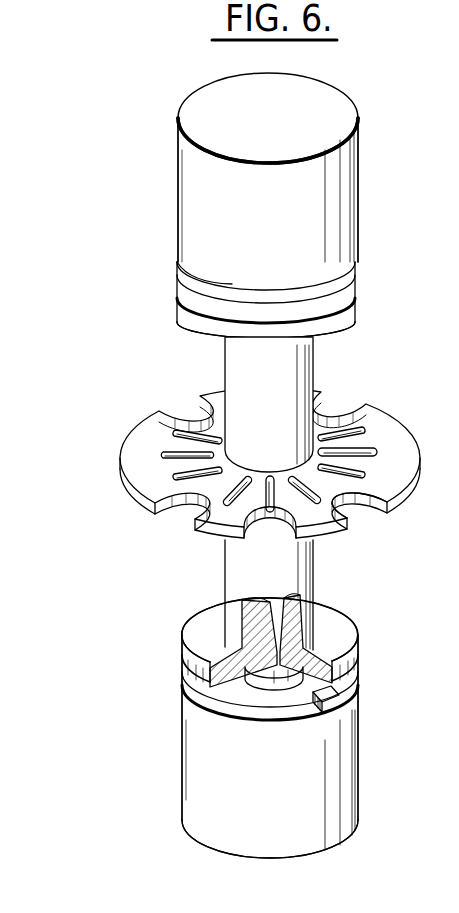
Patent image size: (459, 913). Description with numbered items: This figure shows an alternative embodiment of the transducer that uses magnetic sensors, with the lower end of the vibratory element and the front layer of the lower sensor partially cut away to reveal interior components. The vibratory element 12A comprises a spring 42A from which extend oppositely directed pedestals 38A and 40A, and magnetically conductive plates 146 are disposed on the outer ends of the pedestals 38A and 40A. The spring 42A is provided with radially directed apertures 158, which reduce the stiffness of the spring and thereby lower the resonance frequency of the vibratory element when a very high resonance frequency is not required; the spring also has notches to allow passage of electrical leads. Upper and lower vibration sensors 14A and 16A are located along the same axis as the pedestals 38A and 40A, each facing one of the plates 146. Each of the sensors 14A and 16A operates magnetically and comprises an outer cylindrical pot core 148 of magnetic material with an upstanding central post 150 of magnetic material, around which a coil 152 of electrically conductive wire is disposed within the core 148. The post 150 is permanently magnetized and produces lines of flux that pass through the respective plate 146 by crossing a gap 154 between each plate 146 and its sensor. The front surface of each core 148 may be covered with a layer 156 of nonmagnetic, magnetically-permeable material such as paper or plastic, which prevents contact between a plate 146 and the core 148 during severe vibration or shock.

The vibratory element 12A is at (225, 456).
The upper vibration sensor 14A is at (172, 198).
The lower vibration sensor 16A is at (173, 782).
The pedestal 38A is at (317, 355).
The pedestal 40A is at (233, 557).
The spring 42A is at (398, 503).
The magnetically conductive plate 146 is at (350, 307).
The pot core 148 is at (338, 160).
The central post 150 is at (252, 660).
The coil 152 is at (223, 695).
The gap 154 is at (355, 285).
The layer 156 is at (183, 262).
The radially directed apertures 158 is at (175, 477).